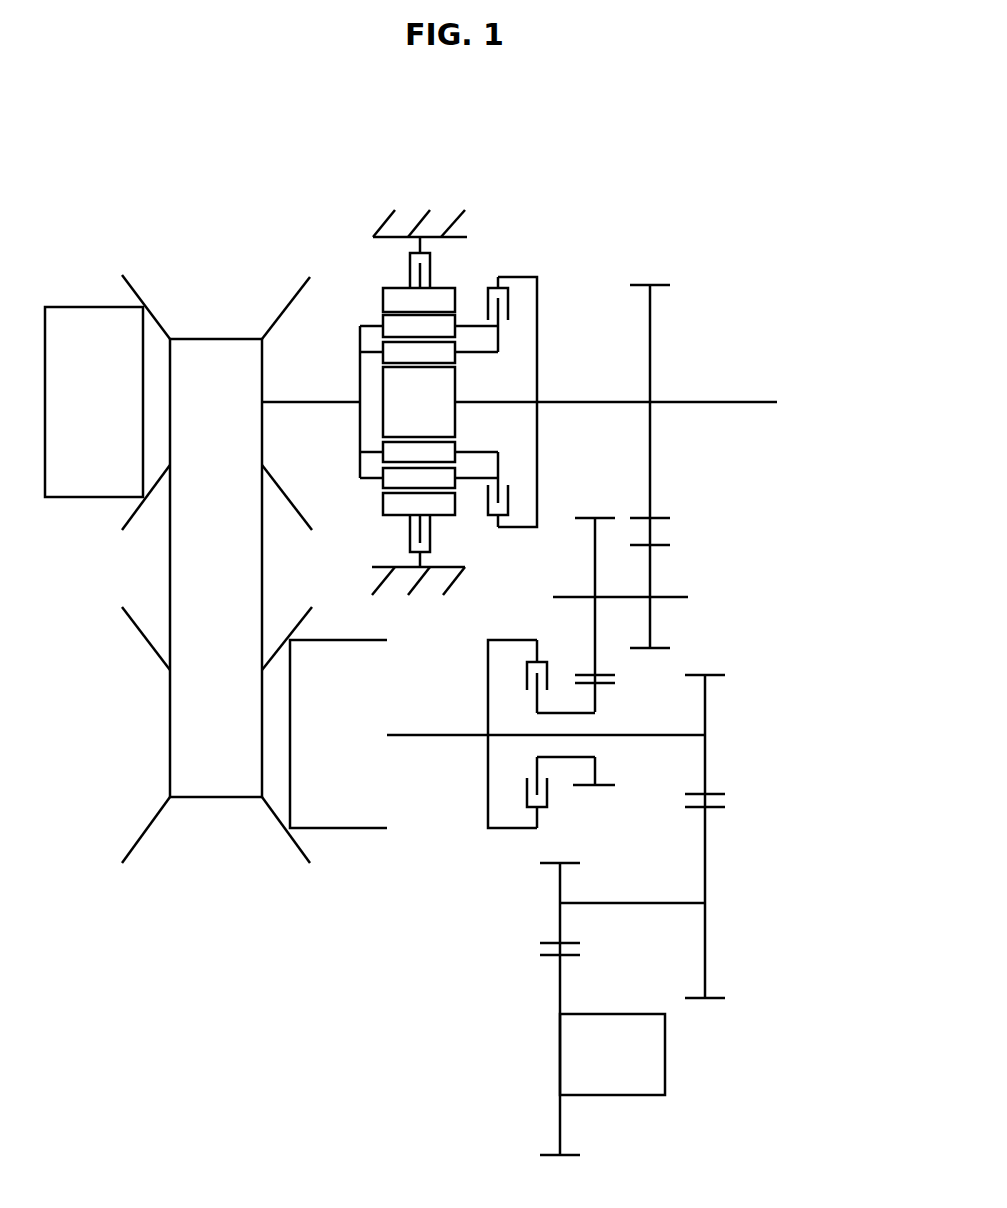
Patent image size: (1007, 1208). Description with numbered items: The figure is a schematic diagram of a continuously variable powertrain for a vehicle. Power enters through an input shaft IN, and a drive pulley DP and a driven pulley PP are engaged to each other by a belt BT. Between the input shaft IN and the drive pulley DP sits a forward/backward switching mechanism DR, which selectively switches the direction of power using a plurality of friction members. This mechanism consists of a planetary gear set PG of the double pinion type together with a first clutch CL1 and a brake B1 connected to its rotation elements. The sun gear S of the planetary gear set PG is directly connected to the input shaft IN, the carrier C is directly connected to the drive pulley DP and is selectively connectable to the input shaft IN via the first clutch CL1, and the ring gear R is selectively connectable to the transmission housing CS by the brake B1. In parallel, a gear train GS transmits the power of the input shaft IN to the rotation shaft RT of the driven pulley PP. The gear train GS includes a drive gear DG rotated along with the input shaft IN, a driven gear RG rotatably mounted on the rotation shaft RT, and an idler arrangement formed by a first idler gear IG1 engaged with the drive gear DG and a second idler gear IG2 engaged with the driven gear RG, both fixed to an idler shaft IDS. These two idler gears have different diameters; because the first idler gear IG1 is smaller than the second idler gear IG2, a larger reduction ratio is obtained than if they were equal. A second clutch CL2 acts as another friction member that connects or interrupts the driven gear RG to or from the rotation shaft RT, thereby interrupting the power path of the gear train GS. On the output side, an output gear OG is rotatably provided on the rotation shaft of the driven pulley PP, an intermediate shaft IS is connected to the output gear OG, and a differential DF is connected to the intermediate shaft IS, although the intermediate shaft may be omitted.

The drive pulley DP is at (135, 292).
The belt BT is at (170, 577).
The driven pulley PP is at (135, 845).
The input shaft IN is at (740, 400).
The forward/backward switching mechanism DR is at (547, 243).
The planetary gear set PG is at (413, 367).
The ring gear R is at (383, 303).
The sun gear S is at (455, 383).
The carrier C is at (398, 402).
The brake B1 is at (398, 258).
The transmission housing CS is at (425, 213).
The first clutch CL1 is at (489, 276).
The gear train GS is at (678, 641).
The drive gear DG is at (670, 518).
The first idler gear IG1 is at (670, 545).
The idler shaft IDS is at (553, 597).
The second idler gear IG2 is at (605, 675).
The driven gear RG is at (701, 836).
The rotation shaft RT is at (445, 738).
The second clutch CL2 is at (518, 798).
The output gear OG is at (718, 792).
The intermediate shaft IS is at (685, 900).
The differential DF is at (665, 1052).